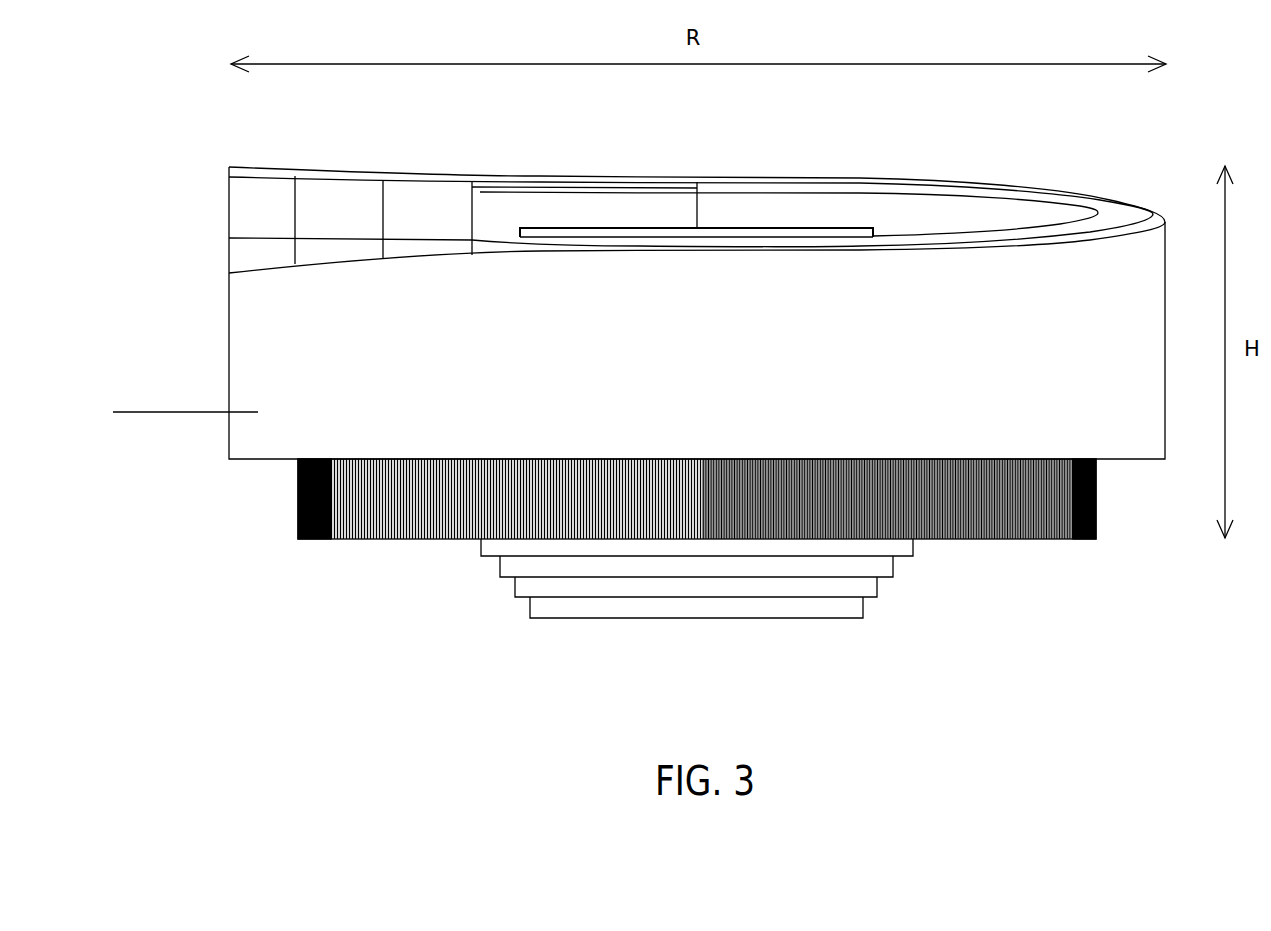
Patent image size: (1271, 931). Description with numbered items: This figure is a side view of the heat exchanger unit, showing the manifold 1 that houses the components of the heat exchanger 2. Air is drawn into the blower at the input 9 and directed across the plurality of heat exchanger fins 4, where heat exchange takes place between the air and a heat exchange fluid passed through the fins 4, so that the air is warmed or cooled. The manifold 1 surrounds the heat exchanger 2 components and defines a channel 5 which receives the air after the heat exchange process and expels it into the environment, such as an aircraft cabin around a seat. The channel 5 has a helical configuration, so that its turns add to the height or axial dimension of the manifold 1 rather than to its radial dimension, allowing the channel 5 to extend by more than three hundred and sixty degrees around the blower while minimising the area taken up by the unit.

The manifold 1 is at (1128, 176).
The heat exchanger 2 is at (792, 228).
The heat exchanger fins 4 is at (1065, 538).
The channel 5 is at (509, 201).
The input 9 is at (698, 227).